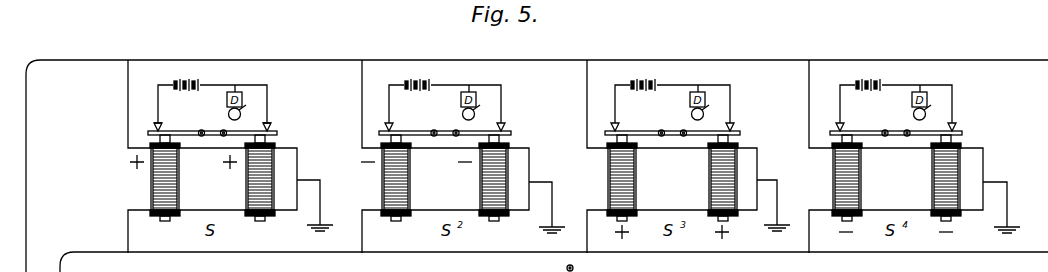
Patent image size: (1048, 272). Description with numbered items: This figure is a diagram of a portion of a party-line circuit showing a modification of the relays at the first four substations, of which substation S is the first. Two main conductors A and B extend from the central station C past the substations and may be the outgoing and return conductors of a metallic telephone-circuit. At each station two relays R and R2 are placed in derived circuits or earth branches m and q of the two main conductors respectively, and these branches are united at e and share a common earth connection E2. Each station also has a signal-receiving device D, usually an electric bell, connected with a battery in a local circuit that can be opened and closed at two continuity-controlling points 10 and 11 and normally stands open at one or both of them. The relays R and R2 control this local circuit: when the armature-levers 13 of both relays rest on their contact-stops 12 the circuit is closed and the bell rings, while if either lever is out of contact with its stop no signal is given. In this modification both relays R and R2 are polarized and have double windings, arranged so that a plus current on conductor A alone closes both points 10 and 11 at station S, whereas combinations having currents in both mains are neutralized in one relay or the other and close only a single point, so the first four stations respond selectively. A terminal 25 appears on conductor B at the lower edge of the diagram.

The continuity-controlling point 10 is at (166, 128).
The continuity-controlling point 11 is at (276, 132).
The contact-stop 12 is at (157, 123).
The armature-lever 13 is at (148, 134).
The terminal 25 is at (560, 266).
The main conductor A is at (537, 157).
The main conductor B is at (554, 262).
The central station C is at (555, 104).
The signal-receiving device D is at (579, 106).
The substation S is at (527, 77).
The relay R is at (492, 178).
The relay R2 is at (589, 178).
The junction point e is at (652, 193).
The common earth connection E2 is at (663, 219).
The earth branch q is at (137, 227).
The earth branch m is at (123, 71).